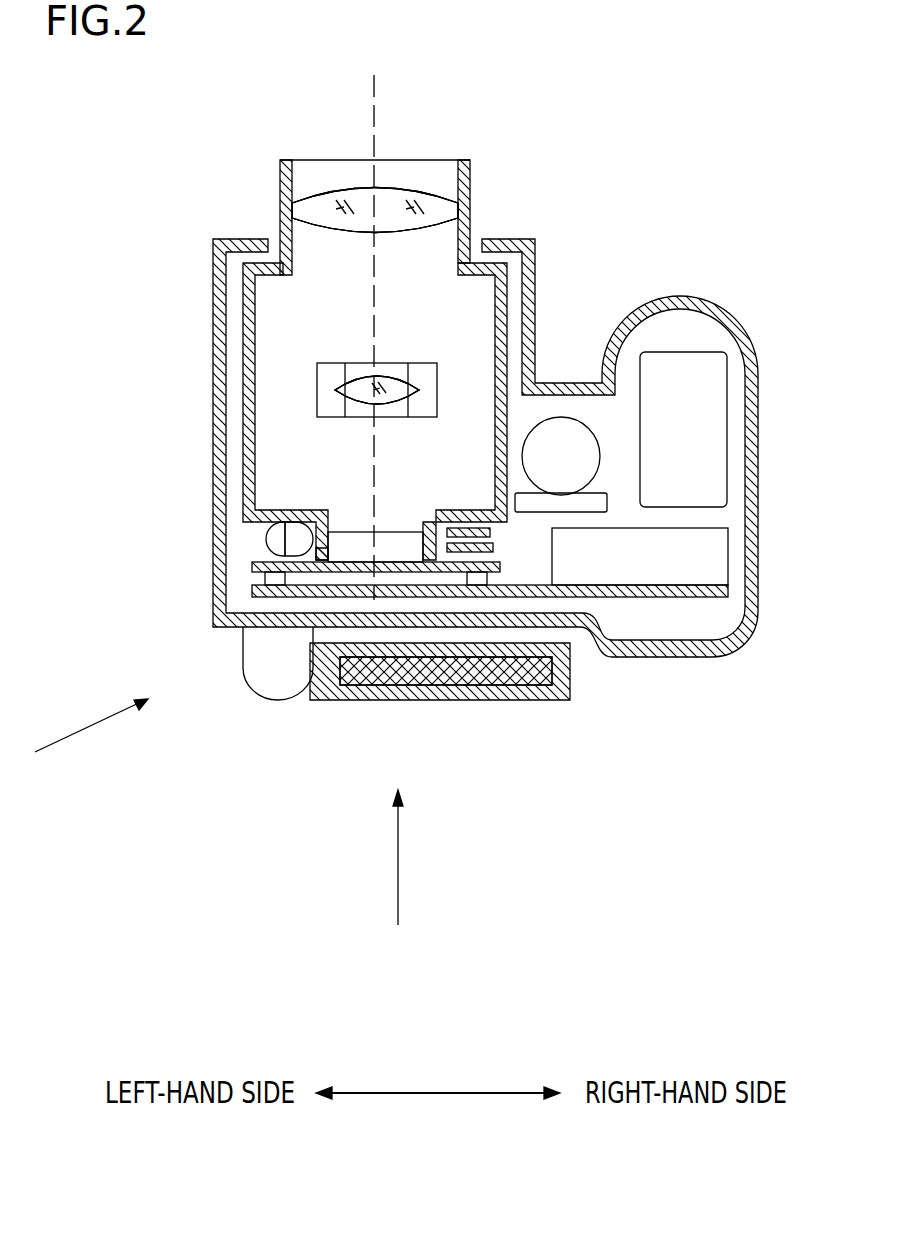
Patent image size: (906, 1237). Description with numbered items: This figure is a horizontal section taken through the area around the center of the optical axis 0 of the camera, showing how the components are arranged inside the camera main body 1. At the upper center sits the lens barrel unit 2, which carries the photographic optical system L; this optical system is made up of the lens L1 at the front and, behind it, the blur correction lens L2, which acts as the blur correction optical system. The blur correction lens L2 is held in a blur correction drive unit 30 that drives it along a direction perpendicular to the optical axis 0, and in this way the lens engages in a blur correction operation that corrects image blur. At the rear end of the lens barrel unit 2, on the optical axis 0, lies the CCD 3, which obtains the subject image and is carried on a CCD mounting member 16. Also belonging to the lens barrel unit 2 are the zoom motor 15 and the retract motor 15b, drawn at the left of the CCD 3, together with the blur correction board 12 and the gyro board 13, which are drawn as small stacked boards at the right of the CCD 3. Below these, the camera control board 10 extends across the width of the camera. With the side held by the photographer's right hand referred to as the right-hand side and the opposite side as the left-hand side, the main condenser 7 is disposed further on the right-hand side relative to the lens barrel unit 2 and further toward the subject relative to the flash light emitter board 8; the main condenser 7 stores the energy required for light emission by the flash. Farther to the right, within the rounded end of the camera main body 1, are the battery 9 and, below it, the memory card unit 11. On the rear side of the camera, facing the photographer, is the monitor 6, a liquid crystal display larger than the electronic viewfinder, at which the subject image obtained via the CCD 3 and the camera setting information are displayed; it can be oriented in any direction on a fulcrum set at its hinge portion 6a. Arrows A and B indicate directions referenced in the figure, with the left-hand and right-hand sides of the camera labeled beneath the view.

The camera main body 1 is at (735, 330).
The optical axis 0 is at (374, 314).
The lens barrel unit 2 is at (330, 175).
The lens L1 is at (358, 222).
The blur correction lens L2 is at (358, 382).
The photographic optical system L is at (438, 290).
The blur correction drive unit 30 is at (333, 375).
The CCD 3 is at (380, 540).
The main condenser 7 is at (560, 430).
The flash light emitter board 8 is at (598, 500).
The battery 9 is at (707, 452).
The memory card unit 11 is at (707, 559).
The camera control board 10 is at (262, 567).
The zoom motor 15 is at (272, 532).
The retract motor 15b is at (297, 538).
The CCD mounting member 16 is at (318, 550).
The blur correction board 12 is at (460, 550).
The gyro board 13 is at (443, 537).
The monitor 6 is at (472, 676).
The hinge portion 6a is at (272, 682).
The direction A is at (76, 743).
The direction B is at (398, 876).